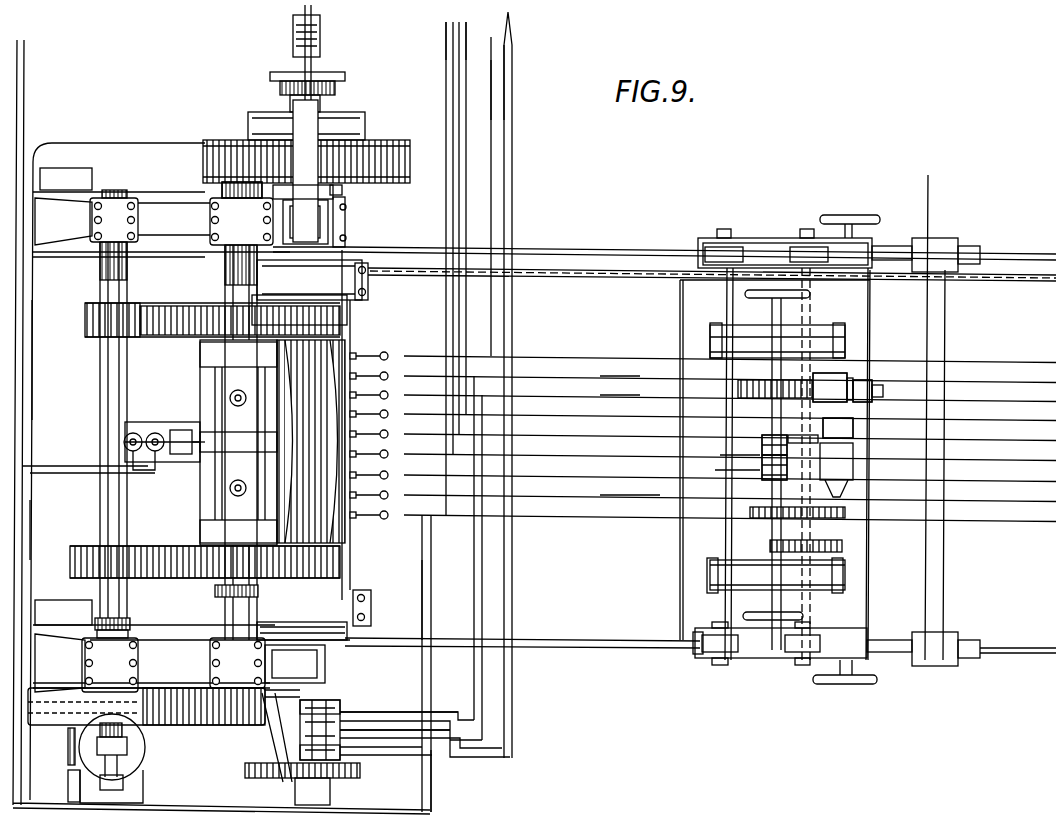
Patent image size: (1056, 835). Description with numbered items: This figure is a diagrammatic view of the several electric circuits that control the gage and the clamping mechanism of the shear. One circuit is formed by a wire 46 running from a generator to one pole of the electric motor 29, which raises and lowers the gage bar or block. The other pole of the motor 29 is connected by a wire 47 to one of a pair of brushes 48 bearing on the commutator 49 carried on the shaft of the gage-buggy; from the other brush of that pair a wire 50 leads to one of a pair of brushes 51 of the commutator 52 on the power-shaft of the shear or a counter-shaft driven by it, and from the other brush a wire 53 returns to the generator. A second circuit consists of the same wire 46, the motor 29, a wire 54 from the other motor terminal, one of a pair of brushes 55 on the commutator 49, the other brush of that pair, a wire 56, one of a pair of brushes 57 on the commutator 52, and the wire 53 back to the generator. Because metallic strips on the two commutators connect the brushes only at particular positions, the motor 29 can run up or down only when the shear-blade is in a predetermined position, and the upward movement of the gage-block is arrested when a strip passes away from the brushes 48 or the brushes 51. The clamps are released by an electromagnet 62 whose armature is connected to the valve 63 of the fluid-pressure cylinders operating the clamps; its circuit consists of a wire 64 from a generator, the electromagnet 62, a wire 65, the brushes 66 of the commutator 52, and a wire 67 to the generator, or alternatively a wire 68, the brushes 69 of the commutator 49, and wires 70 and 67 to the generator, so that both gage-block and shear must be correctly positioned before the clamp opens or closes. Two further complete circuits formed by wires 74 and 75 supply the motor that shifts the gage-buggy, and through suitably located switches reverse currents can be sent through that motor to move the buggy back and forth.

The electric motor 29 is at (874, 395).
The wire 46 is at (494, 96).
The wire 47 is at (830, 388).
The pair of brushes 48 is at (762, 448).
The commutator 49 is at (725, 450).
The wire 50 is at (553, 376).
The pair of brushes 51 is at (350, 712).
The commutator 52 is at (338, 693).
The wire 53 is at (503, 592).
The wire 54 is at (838, 429).
The pair of brushes 55 is at (788, 468).
The wire 56 is at (595, 395).
The pair of brushes 57 is at (345, 733).
The electromagnet 62 is at (140, 437).
The valve 63 is at (198, 430).
The wire 64 is at (23, 352).
The wire 65 is at (20, 547).
The brushes 66 is at (349, 761).
The wire 67 is at (432, 795).
The wire 68 is at (585, 525).
The brushes 69 is at (726, 470).
The wire 70 is at (650, 495).
The wire 74 is at (447, 42).
The wire 75 is at (464, 36).